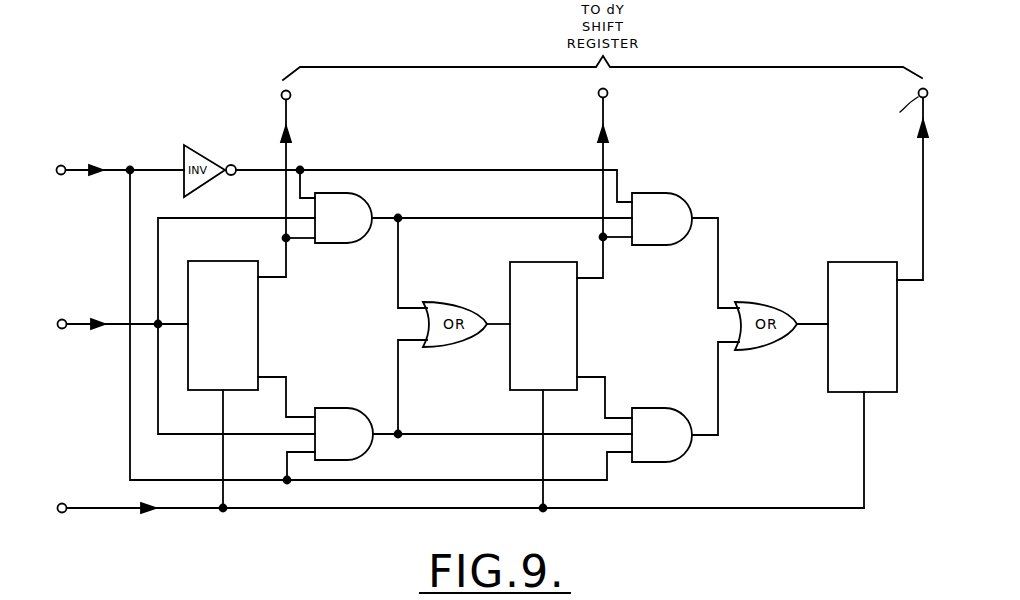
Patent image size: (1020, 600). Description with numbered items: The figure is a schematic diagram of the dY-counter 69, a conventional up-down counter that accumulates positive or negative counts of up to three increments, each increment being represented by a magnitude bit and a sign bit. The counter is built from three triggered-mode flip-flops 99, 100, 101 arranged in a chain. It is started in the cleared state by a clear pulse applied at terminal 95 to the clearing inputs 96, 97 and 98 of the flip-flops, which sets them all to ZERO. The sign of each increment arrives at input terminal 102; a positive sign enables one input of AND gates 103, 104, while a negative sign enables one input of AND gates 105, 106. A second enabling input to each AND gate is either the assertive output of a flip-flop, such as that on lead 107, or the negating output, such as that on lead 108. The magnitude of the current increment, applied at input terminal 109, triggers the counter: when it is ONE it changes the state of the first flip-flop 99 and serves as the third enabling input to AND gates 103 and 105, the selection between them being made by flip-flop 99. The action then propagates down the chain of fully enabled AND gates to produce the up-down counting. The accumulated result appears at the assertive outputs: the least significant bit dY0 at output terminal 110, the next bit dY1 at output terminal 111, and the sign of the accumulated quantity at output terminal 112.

The dY-counter 69 is at (281, 510).
The clear pulse terminal 95 is at (62, 503).
The clearing input 96 is at (222, 403).
The clearing input 97 is at (542, 402).
The clearing input 98 is at (863, 416).
The first flip-flop 99 is at (258, 314).
The flip-flop 100 is at (578, 320).
The flip-flop 101 is at (858, 261).
The input terminal 102 is at (62, 175).
The AND gate 103 is at (367, 199).
The AND gate 104 is at (682, 200).
The AND gate 105 is at (370, 449).
The AND gate 106 is at (690, 451).
The lead 107 is at (288, 258).
The lead 108 is at (288, 391).
The input terminal 109 is at (62, 319).
The output terminal 110 is at (282, 99).
The output terminal 111 is at (598, 98).
The output terminal 112 is at (920, 145).